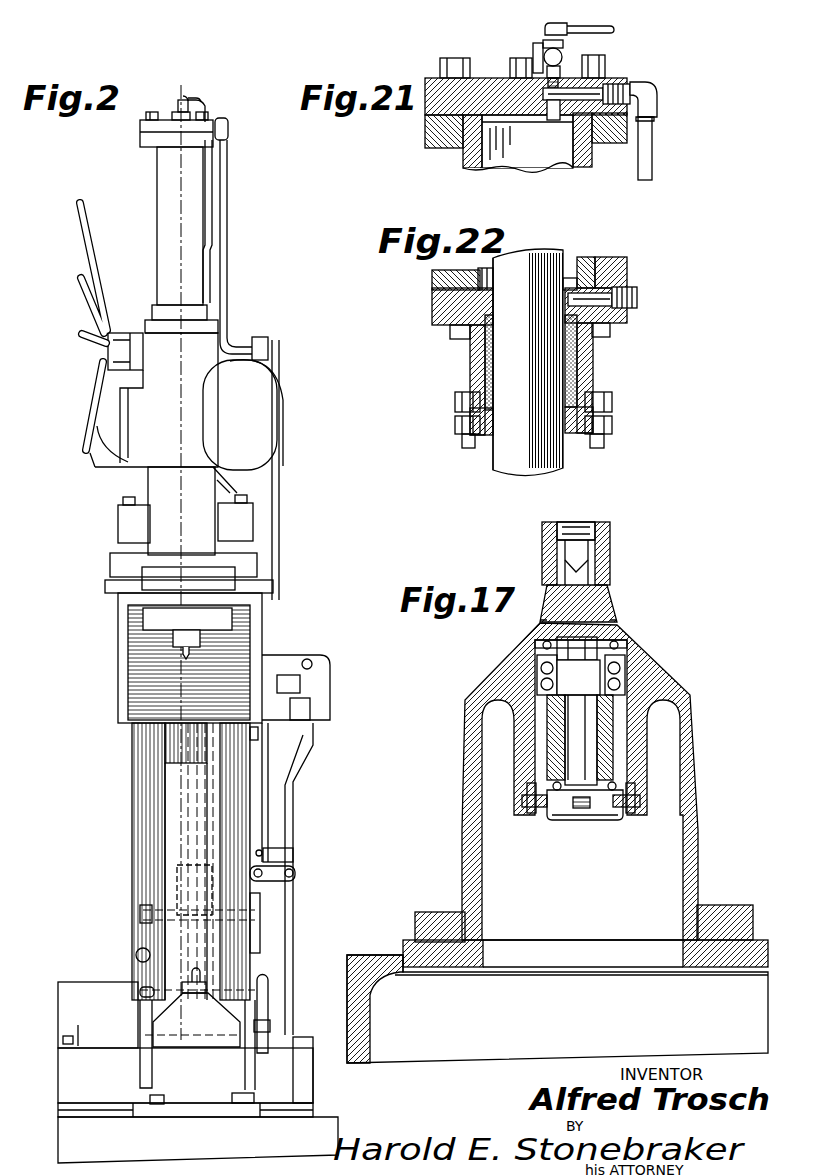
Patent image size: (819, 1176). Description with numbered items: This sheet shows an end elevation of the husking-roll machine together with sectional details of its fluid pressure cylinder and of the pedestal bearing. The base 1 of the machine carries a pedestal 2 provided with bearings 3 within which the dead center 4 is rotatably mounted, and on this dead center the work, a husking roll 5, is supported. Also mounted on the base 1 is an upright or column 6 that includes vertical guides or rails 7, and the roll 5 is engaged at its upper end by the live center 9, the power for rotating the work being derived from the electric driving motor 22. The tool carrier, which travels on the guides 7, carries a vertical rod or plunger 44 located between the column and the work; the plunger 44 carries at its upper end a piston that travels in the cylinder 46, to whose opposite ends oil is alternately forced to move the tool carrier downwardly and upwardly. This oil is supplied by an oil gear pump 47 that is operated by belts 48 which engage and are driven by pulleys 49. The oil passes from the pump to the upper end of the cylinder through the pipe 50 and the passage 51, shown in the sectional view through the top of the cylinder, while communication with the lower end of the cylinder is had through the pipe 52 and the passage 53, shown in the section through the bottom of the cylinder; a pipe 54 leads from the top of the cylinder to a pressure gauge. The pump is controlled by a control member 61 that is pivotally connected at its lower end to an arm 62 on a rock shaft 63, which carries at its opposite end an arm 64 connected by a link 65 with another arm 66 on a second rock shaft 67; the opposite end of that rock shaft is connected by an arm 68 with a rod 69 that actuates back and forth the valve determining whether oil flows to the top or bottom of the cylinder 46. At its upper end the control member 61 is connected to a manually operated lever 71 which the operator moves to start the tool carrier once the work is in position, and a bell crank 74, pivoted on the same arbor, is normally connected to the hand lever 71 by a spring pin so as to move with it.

In FIG. 17, the base 1 is at (372, 1057).
In FIG. 2, the pedestal 2 is at (162, 1068).
In FIG. 17, the pedestal 2 is at (698, 768).
In FIG. 2, the bearings 3 is at (193, 83).
In FIG. 17, the bearings 3 is at (618, 673).
In FIG. 2, the dead center 4 is at (194, 968).
In FIG. 17, the dead center 4 is at (590, 572).
In FIG. 17, the husking roll 5 is at (604, 529).
In FIG. 2, the upright or column 6 is at (170, 838).
In FIG. 2, the vertical guides or rails 7 is at (250, 775).
In FIG. 2, the live center 9 is at (195, 656).
In FIG. 2, the electric driving motor 22 is at (92, 388).
In FIG. 22, the vertical rod or plunger 44 is at (500, 462).
In FIG. 2, the cylinder 46 is at (160, 205).
In FIG. 21, the cylinder 46 is at (470, 170).
In FIG. 22, the cylinder 46 is at (580, 262).
In FIG. 2, the oil gear pump 47 is at (280, 946).
In FIG. 2, the belts 48 is at (276, 497).
In FIG. 2, the pulleys 49 is at (282, 402).
In FIG. 2, the pipe 50 is at (222, 190).
In FIG. 21, the pipe 50 is at (652, 158).
In FIG. 21, the passage 51 is at (554, 118).
In FIG. 2, the pipe 52 is at (270, 1028).
In FIG. 22, the pipe 52 is at (637, 303).
In FIG. 22, the passage 53 is at (628, 270).
In FIG. 2, the pipe 54 is at (205, 104).
In FIG. 21, the pipe 54 is at (614, 30).
In FIG. 2, the control member 61 is at (294, 820).
In FIG. 2, the arm 62 is at (292, 882).
In FIG. 2, the rock shaft 63 is at (268, 865).
In FIG. 2, the arm 64 is at (255, 900).
In FIG. 2, the link 65 is at (194, 890).
In FIG. 2, the arm 66 is at (148, 925).
In FIG. 2, the rock shaft 67 is at (140, 950).
In FIG. 2, the arm 68 is at (142, 978).
In FIG. 2, the rod 69 is at (165, 1000).
In FIG. 2, the manually operated lever 71 is at (308, 660).
In FIG. 2, the bell crank 74 is at (302, 690).